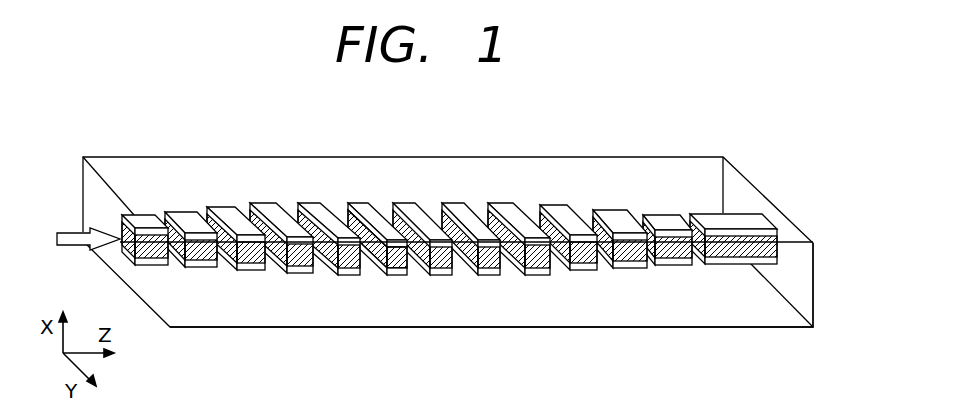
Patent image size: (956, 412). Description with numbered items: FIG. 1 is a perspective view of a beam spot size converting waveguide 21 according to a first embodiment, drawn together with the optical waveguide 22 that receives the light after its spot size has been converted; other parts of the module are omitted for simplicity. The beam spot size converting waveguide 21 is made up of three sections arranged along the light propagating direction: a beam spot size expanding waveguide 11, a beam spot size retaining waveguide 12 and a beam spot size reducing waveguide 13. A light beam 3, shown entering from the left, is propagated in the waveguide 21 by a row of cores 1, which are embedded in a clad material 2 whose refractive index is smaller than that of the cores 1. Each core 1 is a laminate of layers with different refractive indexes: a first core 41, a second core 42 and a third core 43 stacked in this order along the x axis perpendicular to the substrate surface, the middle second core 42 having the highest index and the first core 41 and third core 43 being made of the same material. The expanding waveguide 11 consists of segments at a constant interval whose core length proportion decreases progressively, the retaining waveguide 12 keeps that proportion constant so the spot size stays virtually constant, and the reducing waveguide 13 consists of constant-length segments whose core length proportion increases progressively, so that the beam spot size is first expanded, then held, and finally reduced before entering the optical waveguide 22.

The core 1 is at (778, 264).
The clad material 2 is at (592, 305).
The light beam 3 is at (73, 247).
The beam spot size expanding waveguide 11 is at (204, 219).
The beam spot size retaining waveguide 12 is at (390, 267).
The beam spot size reducing waveguide 13 is at (478, 186).
The beam spot size converting waveguide 21 is at (365, 231).
The optical waveguide 22 is at (653, 186).
The first core 41 is at (389, 276).
The second core 42 is at (401, 270).
The third core 43 is at (410, 256).